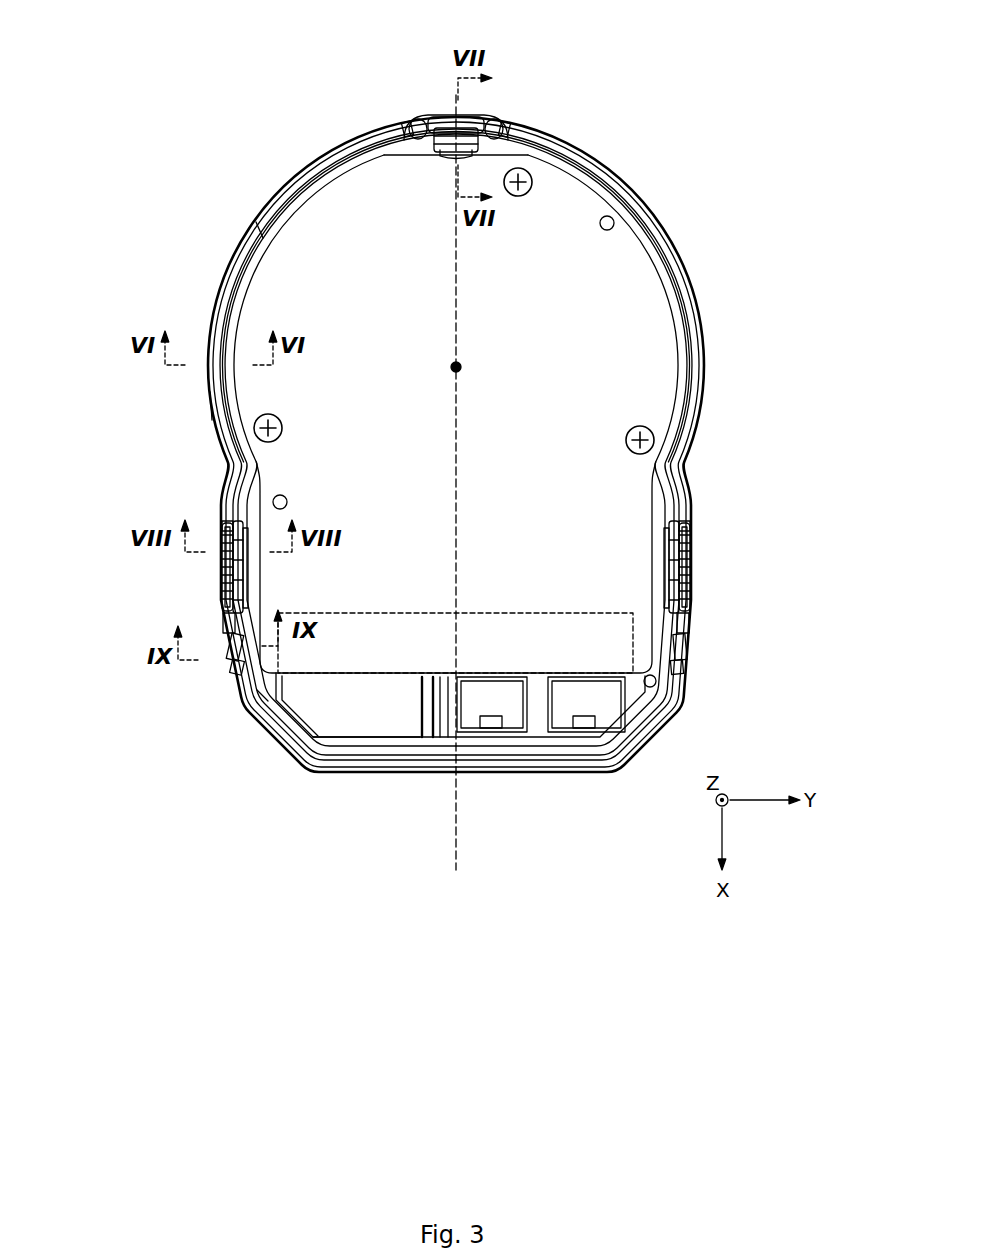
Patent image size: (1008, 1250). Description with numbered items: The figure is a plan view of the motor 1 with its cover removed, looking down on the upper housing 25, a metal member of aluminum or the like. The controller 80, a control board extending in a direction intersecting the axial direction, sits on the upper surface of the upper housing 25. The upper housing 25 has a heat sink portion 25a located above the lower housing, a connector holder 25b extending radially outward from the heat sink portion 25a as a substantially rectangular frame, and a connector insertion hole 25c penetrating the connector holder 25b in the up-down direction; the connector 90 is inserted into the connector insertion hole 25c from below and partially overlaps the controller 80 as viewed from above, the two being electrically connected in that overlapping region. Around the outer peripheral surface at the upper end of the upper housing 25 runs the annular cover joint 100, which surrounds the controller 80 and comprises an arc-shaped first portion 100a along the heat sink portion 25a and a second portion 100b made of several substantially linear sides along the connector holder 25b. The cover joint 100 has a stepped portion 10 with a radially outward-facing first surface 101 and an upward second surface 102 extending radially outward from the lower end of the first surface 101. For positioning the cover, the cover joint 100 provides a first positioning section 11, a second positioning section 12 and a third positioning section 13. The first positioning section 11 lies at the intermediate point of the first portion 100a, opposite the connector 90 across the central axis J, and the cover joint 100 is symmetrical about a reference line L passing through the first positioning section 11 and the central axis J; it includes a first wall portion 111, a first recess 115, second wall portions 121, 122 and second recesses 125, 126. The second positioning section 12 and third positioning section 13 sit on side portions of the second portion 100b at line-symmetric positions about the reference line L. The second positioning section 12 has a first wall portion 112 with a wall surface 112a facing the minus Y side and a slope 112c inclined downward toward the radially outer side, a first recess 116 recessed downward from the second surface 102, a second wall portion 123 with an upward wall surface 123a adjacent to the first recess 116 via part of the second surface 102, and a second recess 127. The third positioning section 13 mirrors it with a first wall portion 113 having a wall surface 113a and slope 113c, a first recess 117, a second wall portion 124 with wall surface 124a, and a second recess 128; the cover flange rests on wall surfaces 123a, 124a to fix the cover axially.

The motor 1 is at (686, 112).
The stepped portion 10 is at (394, 444).
The first surface 101 is at (245, 273).
The second surface 102 is at (235, 319).
The first positioning section 11 is at (456, 81).
The first wall portion 111 is at (474, 114).
The first recess 115 is at (450, 115).
The second wall portion 121 is at (497, 120).
The second wall portion 122 is at (416, 116).
The second recess 125 is at (504, 128).
The second recess 126 is at (408, 122).
The second positioning section 12 is at (159, 590).
The first wall portion 112 is at (232, 558).
The wall surface 112a is at (238, 578).
The slope 112c is at (228, 528).
The first recess 116 is at (240, 596).
The second wall portion 123 is at (237, 624).
The wall surface 123a is at (226, 658).
The second recess 127 is at (233, 666).
The third positioning section 13 is at (757, 597).
The first wall portion 113 is at (686, 535).
The wall surface 113a is at (676, 568).
The slope 113c is at (688, 552).
The first recess 117 is at (672, 590).
The second wall portion 124 is at (690, 625).
The wall surface 124a is at (686, 648).
The second recess 128 is at (684, 664).
The upper housing 25 is at (657, 200).
The heat sink portion 25a is at (258, 228).
The connector holder 25b is at (263, 695).
The connector insertion hole 25c is at (341, 732).
The controller 80 is at (643, 280).
The connector 90 is at (393, 720).
The cover joint 100 is at (272, 188).
The first portion 100a is at (205, 405).
The second portion 100b is at (563, 776).
The central axis J is at (456, 367).
The reference line L is at (458, 862).